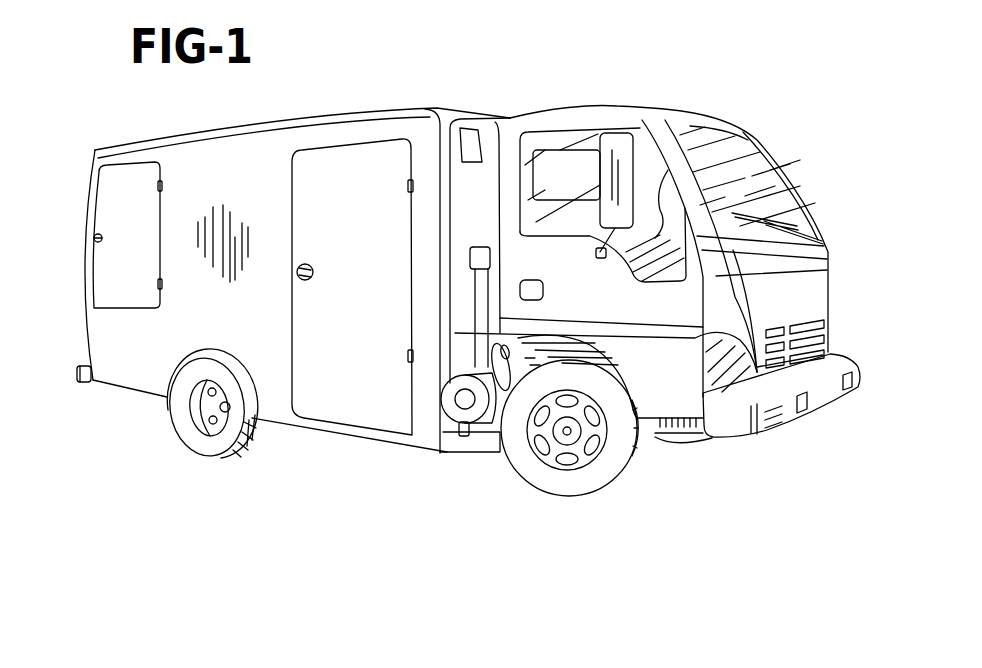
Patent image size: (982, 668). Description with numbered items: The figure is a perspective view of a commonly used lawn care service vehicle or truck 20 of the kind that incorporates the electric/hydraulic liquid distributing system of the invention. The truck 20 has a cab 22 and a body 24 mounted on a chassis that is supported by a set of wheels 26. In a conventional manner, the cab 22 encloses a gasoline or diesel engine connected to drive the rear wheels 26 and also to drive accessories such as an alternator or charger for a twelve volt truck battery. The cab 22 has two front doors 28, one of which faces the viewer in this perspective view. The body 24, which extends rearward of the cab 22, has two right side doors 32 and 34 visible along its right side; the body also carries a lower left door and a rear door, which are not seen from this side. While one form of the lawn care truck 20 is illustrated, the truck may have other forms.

The lawn care service vehicle or truck 20 is at (534, 78).
The cab 22 is at (836, 256).
The body 24 is at (306, 112).
The wheels 26 is at (197, 445).
The front doors 28 is at (670, 400).
The right side door 32 is at (340, 410).
The right side door 34 is at (110, 183).